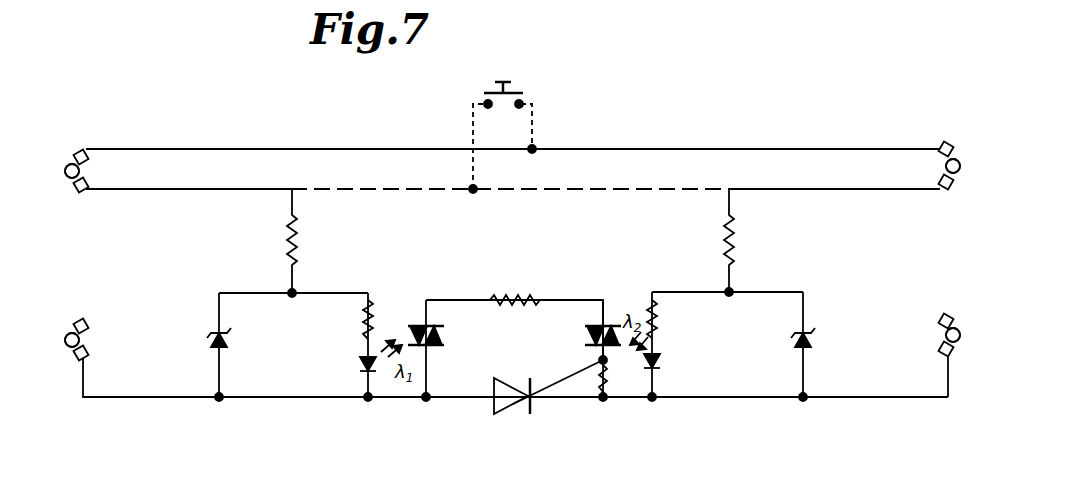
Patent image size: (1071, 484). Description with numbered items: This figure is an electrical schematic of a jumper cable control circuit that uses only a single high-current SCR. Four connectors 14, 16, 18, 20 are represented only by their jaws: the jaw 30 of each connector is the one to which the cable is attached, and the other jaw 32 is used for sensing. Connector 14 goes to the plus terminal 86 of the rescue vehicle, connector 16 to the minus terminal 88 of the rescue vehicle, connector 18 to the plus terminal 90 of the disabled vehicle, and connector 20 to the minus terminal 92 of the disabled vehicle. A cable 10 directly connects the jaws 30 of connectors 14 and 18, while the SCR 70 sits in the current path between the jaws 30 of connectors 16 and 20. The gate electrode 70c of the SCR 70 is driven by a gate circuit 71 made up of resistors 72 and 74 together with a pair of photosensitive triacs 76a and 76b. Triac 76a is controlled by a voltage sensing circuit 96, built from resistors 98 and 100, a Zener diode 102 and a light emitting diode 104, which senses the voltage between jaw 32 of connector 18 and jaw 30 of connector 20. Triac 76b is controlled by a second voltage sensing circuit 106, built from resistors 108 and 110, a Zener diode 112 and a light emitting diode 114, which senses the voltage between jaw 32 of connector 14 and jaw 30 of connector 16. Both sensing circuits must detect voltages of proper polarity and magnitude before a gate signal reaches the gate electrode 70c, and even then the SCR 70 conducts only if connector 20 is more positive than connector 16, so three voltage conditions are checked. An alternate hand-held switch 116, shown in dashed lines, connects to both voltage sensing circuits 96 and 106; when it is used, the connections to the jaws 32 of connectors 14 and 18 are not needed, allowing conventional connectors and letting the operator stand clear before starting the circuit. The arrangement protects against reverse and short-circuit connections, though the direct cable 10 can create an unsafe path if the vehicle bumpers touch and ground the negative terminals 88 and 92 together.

The cable 10 is at (615, 149).
The connector 14 is at (958, 148).
The connector 16 is at (938, 342).
The connector 18 is at (95, 140).
The connector 20 is at (75, 366).
The jaw 30 is at (79, 150).
The jaw 32 is at (82, 192).
The SCR 70 is at (512, 410).
The gate electrode 70c is at (554, 382).
The gate circuit 71 is at (575, 283).
The resistor 72 is at (607, 380).
The resistor 74 is at (501, 299).
The photosensitive triac 76a is at (444, 336).
The photosensitive triac 76b is at (586, 337).
The plus terminal 86 is at (946, 166).
The minus terminal 88 is at (946, 335).
The plus terminal 90 is at (80, 171).
The minus terminal 92 is at (80, 340).
The voltage sensing circuit 96 is at (346, 285).
The resistor 98 is at (298, 240).
The resistor 100 is at (362, 328).
The Zener diode 102 is at (229, 338).
The light emitting diode 104 is at (360, 367).
The voltage sensing circuit 106 is at (762, 290).
The resistor 108 is at (736, 236).
The resistor 110 is at (658, 318).
The Zener diode 112 is at (794, 344).
The light emitting diode 114 is at (661, 362).
The alternate hand-held switch 116 is at (535, 92).